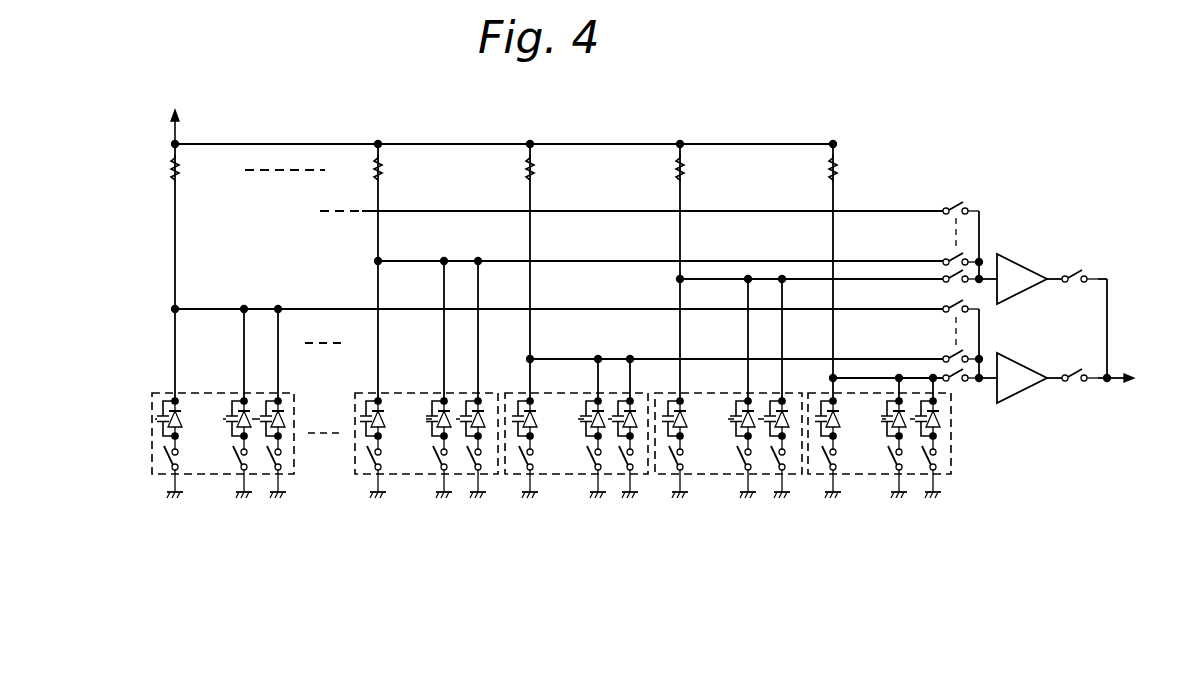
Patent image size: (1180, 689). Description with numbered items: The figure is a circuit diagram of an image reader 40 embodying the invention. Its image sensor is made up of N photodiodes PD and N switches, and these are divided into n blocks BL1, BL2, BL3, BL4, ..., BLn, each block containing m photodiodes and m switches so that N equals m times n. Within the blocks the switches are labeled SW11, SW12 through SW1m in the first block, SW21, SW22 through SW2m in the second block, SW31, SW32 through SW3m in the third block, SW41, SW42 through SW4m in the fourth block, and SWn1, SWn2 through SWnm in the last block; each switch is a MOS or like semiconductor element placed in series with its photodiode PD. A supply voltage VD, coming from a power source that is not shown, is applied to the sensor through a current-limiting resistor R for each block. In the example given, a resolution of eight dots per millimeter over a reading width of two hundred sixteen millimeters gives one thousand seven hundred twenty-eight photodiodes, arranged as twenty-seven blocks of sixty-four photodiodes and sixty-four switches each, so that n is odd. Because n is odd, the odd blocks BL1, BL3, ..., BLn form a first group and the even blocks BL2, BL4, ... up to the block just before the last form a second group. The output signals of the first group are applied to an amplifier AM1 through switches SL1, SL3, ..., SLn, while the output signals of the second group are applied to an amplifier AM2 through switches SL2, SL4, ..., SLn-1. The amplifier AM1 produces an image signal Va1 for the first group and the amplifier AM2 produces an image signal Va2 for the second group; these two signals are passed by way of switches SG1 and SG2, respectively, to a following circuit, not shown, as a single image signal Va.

The image reader 40 is at (975, 121).
The resistor R is at (520, 168).
The photodiode PD is at (575, 481).
The voltage VD is at (179, 116).
The image signal Va is at (1135, 379).
The image signal Va1 is at (1065, 384).
The image signal Va2 is at (1063, 285).
The amplifier AM1 is at (1006, 348).
The amplifier AM2 is at (1014, 255).
The switch SG1 is at (1064, 367).
The switch SG2 is at (1082, 270).
The switch SL1 is at (980, 388).
The switch SL2 is at (940, 274).
The switch SL3 is at (936, 358).
The switch SL4 is at (941, 254).
The switch SLn is at (946, 297).
The switch SLn-1 is at (960, 206).
The block BL1 is at (873, 481).
The block BL2 is at (720, 481).
The block BL3 is at (567, 481).
The block BL4 is at (413, 481).
The block BLn is at (197, 481).
The switch SW11 is at (928, 470).
The switch SW12 is at (873, 467).
The switch SW1m is at (827, 470).
The switch SW21 is at (778, 470).
The switch SW22 is at (721, 467).
The switch SW2m is at (675, 470).
The switch SW31 is at (624, 470).
The switch SW32 is at (571, 467).
The switch SW3m is at (523, 470).
The switch SW41 is at (470, 470).
The switch SW42 is at (418, 467).
The switch SW4m is at (371, 468).
The switch SWn1 is at (277, 470).
The switch SWn2 is at (217, 467).
The switch SWnm is at (169, 468).